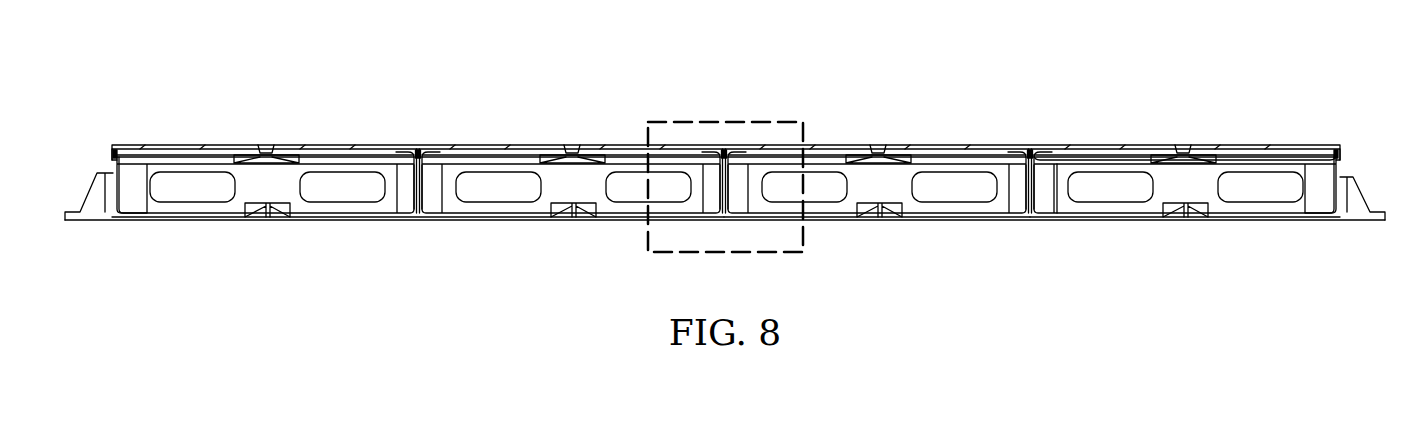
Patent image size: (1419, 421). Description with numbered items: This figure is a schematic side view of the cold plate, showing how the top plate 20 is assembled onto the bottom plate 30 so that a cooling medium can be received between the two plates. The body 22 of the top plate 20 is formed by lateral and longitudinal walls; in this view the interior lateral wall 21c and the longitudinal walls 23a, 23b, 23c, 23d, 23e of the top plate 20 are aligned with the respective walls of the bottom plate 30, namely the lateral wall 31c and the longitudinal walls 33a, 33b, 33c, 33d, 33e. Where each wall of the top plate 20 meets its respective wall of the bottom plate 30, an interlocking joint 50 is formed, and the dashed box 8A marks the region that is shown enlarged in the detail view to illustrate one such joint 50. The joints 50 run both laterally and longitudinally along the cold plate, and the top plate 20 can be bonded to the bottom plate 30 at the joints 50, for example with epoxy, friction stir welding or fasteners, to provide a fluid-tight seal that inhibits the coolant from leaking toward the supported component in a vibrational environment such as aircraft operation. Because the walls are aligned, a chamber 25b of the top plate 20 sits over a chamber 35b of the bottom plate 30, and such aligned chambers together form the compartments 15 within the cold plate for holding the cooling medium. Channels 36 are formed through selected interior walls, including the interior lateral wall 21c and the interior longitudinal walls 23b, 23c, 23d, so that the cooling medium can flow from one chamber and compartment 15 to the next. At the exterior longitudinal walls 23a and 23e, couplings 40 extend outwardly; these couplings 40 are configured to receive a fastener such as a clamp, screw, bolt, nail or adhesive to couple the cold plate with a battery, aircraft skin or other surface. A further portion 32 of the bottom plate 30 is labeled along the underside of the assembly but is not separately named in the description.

The top plate 20 is at (200, 104).
The bottom plate 30 is at (321, 266).
The base rail segment 32 is at (770, 222).
The body 22 is at (334, 147).
The compartment 15 is at (280, 186).
The lateral wall 21c is at (1104, 152).
The lateral wall 31c is at (1056, 205).
The channel 36 is at (165, 201).
The chamber 35b is at (258, 214).
The chamber 25b is at (264, 146).
The interlocking joint 50 is at (112, 139).
The coupling 40 is at (95, 192).
The longitudinal wall 33e is at (101, 203).
The longitudinal wall 33d is at (418, 214).
The longitudinal wall 33c is at (727, 214).
The longitudinal wall 33b is at (1031, 214).
The longitudinal wall 33a is at (1345, 210).
The longitudinal wall 23e is at (111, 152).
The longitudinal wall 23d is at (428, 155).
The longitudinal wall 23c is at (713, 153).
The longitudinal wall 23b is at (1023, 153).
The longitudinal wall 23a is at (1339, 153).
The detail view region 8A is at (768, 119).